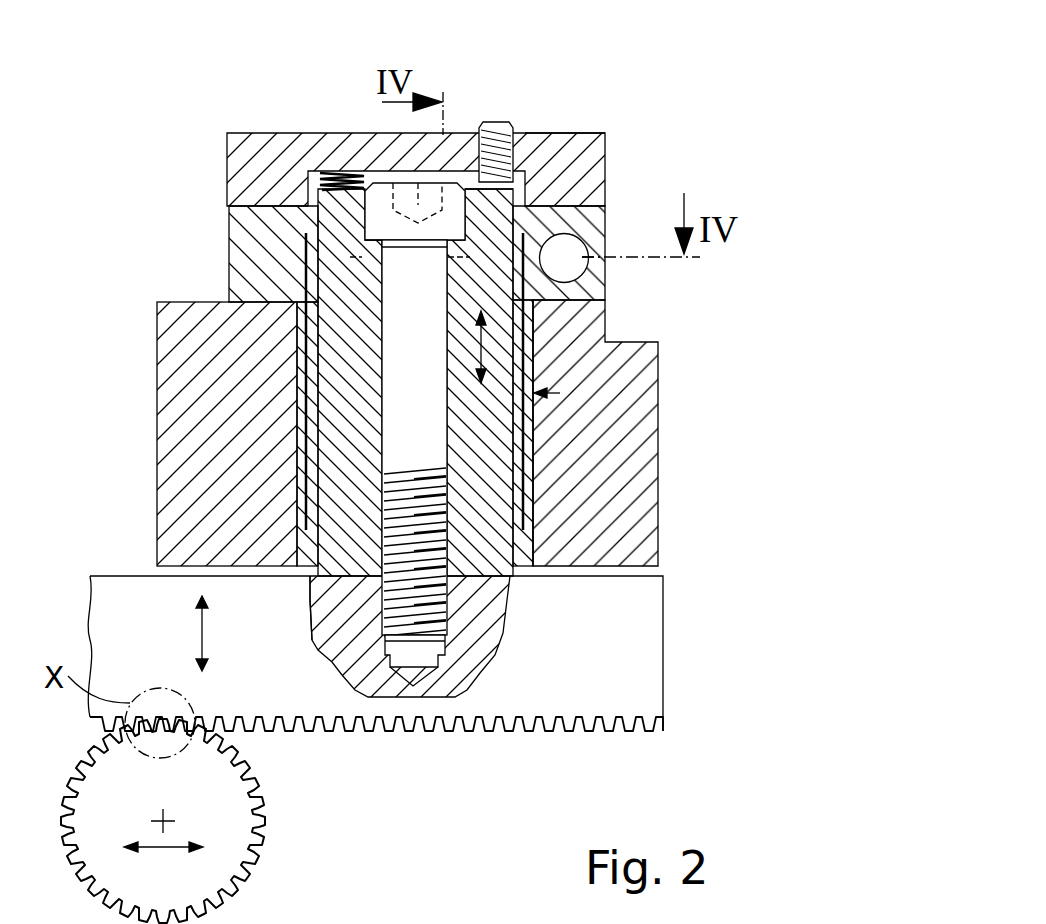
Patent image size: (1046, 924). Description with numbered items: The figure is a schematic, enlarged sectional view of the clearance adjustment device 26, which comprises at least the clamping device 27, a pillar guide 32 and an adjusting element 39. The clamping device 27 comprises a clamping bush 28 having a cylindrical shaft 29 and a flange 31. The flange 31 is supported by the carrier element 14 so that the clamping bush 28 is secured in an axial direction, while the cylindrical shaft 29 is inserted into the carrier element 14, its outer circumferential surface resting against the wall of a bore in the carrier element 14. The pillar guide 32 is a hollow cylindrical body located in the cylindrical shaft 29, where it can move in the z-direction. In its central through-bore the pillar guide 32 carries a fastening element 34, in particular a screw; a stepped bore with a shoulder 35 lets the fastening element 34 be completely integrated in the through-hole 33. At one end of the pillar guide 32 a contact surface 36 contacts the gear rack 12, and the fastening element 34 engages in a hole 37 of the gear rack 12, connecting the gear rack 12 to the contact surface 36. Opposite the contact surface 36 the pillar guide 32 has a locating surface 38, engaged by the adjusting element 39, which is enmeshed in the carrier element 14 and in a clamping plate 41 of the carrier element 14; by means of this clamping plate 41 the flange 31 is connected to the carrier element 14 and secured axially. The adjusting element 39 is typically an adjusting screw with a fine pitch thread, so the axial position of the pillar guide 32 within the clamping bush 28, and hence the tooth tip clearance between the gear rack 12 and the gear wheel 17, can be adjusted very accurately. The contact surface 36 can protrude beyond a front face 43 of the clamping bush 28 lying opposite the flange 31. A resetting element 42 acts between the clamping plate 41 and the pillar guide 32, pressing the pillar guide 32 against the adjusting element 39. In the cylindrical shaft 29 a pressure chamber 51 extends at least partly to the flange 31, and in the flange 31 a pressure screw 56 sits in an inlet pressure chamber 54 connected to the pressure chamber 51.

The gear rack 12 is at (637, 645).
The carrier element 14 is at (637, 545).
The gear wheel 17 is at (222, 842).
The clearance adjustment device 26 is at (498, 100).
The clamping device 27 is at (608, 216).
The clamping bush 28 is at (560, 393).
The cylindrical shaft 29 is at (528, 416).
The flange 31 is at (250, 220).
The pillar guide 32 is at (480, 504).
The through-hole 33 is at (462, 463).
The fastening element 34 is at (430, 432).
The shoulder 35 is at (383, 243).
The contact surface 36 is at (340, 578).
The hole 37 is at (448, 628).
The locating surface 38 is at (471, 172).
The adjusting element 39 is at (540, 116).
The clamping plate 41 is at (280, 133).
The resetting element 42 is at (346, 133).
The front face 43 is at (305, 568).
The pressure chamber 51 is at (533, 368).
The inlet pressure chamber 54 is at (588, 242).
The pressure screw 56 is at (570, 263).